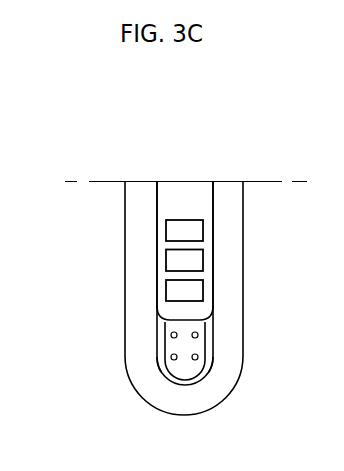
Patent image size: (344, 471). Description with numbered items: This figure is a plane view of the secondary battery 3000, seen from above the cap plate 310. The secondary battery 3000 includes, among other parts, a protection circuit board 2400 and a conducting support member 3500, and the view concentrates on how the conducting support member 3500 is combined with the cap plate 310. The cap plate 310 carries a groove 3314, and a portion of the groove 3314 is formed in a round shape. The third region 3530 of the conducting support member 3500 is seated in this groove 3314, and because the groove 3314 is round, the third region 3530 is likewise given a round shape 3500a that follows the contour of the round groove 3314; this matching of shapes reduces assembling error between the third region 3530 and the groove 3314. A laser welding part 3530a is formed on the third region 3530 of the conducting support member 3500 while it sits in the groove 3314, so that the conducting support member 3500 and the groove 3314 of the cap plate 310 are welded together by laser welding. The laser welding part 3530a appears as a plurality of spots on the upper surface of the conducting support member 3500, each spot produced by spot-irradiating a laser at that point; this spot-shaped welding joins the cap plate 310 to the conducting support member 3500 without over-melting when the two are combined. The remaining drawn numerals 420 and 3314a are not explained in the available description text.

The secondary battery 3000 is at (55, 130).
The cap plate 310 is at (134, 268).
The protection circuit board 2400 is at (148, 222).
The coils / sensing elements 420 is at (203, 230).
The groove 3314 is at (158, 323).
The conducting support member 3500 is at (222, 347).
The third region 3530 is at (165, 342).
The laser welding part 3530a is at (174, 360).
The round shape 3500a is at (155, 373).
The bottom portion of partition 3314a is at (214, 373).